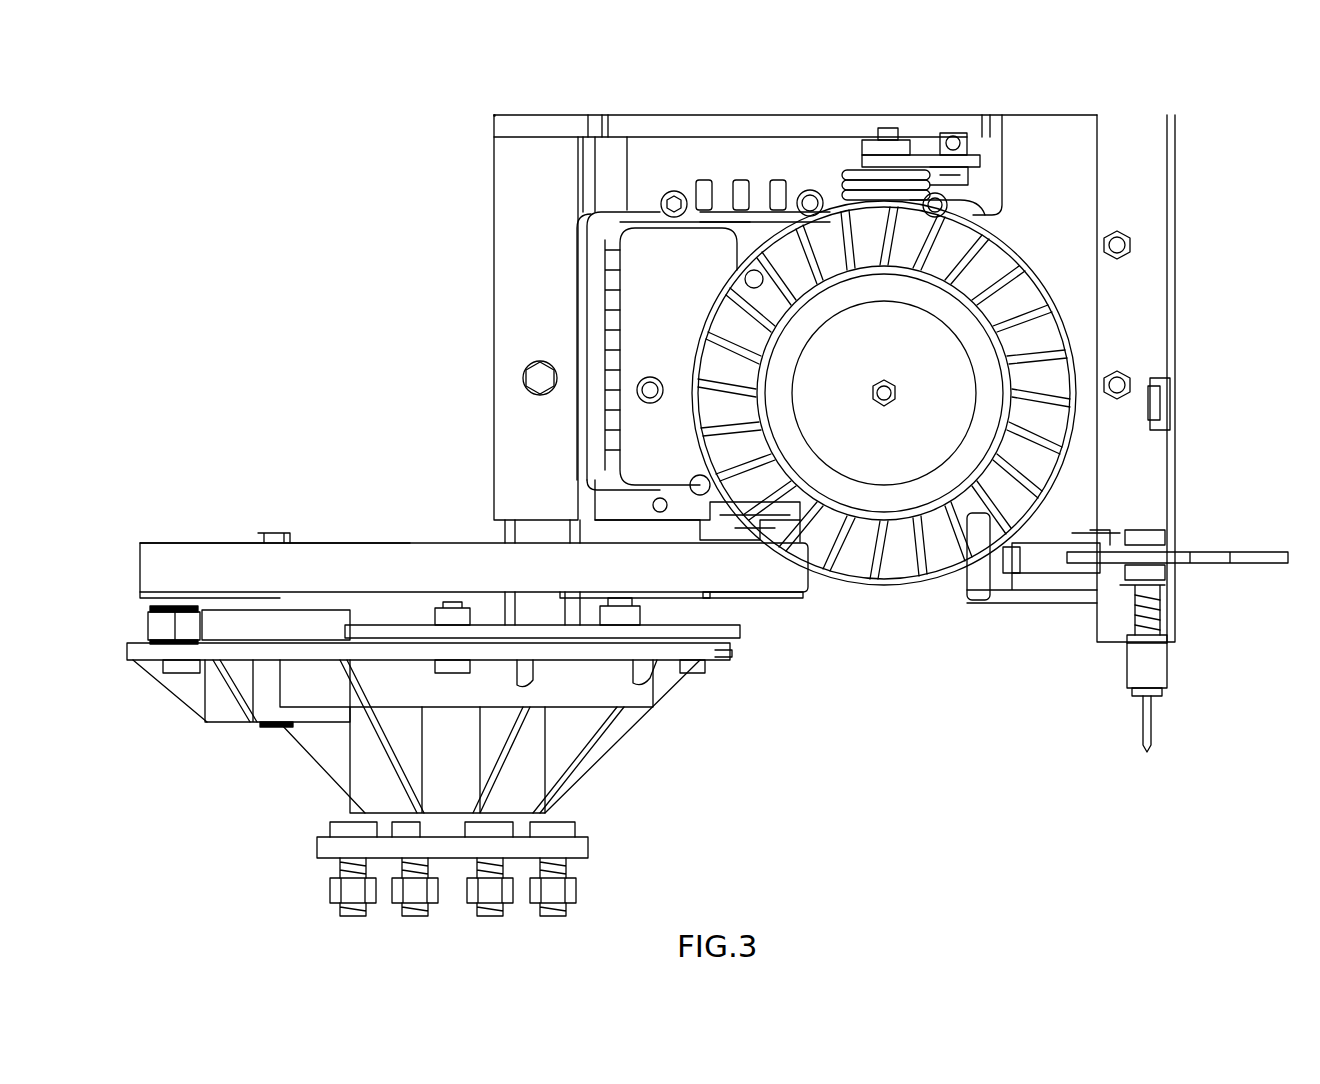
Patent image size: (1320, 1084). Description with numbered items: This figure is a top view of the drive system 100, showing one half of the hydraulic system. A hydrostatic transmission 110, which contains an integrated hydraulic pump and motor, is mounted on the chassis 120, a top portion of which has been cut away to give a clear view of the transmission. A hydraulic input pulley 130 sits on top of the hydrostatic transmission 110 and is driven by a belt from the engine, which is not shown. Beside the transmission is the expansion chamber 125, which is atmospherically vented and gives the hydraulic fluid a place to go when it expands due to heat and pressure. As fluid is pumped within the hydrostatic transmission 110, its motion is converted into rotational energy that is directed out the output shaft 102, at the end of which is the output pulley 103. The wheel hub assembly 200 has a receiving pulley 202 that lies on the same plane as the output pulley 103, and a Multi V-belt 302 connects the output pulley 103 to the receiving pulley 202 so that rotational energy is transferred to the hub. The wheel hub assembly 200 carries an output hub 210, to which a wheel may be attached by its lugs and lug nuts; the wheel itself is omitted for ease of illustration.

The drive system 100 is at (307, 145).
The hydrostatic transmission 110 is at (752, 232).
The expansion chamber 125 is at (650, 323).
The hydraulic input pulley 130 is at (945, 335).
The chassis 120 is at (1145, 465).
The Multi V-belt 302 is at (393, 566).
The receiving pulley 202 is at (200, 540).
The output shaft 102 is at (750, 605).
The output pulley 103 is at (785, 605).
The wheel hub assembly 200 is at (192, 688).
The output hub 210 is at (580, 850).